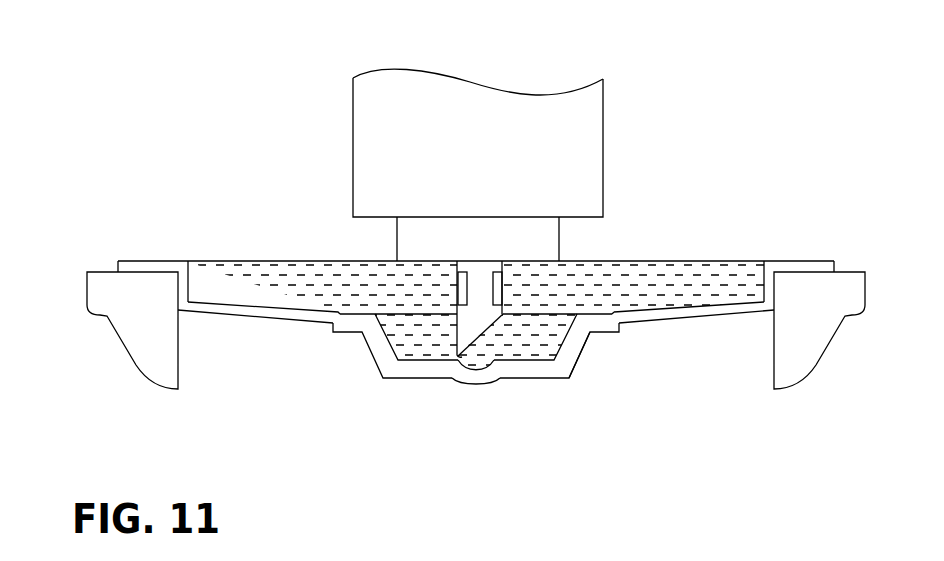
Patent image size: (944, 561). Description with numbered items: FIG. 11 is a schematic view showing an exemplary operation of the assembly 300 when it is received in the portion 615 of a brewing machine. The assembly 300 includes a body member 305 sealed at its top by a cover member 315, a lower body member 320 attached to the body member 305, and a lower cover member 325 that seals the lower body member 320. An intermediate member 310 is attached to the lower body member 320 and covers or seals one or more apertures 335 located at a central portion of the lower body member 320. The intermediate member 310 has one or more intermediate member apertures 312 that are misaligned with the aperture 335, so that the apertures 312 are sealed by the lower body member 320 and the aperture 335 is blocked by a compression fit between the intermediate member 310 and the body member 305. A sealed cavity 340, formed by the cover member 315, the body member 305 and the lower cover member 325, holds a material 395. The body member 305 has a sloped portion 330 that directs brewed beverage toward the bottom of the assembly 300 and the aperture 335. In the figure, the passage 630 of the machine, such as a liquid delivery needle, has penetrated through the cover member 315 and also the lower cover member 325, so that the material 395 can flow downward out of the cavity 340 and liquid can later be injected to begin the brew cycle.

The assembly 300 is at (206, 178).
The body member 305 is at (241, 344).
The intermediate member 310 is at (390, 302).
The intermediate member apertures 312 is at (432, 367).
The cover member 315 is at (639, 247).
The lower body member 320 is at (362, 371).
The lower cover member 325 is at (563, 295).
The portion 330 is at (580, 358).
The aperture 335 is at (477, 405).
The sealed cavity 340 is at (747, 275).
The material 395 is at (698, 275).
The portion 615 is at (115, 385).
The passage 630 is at (422, 278).